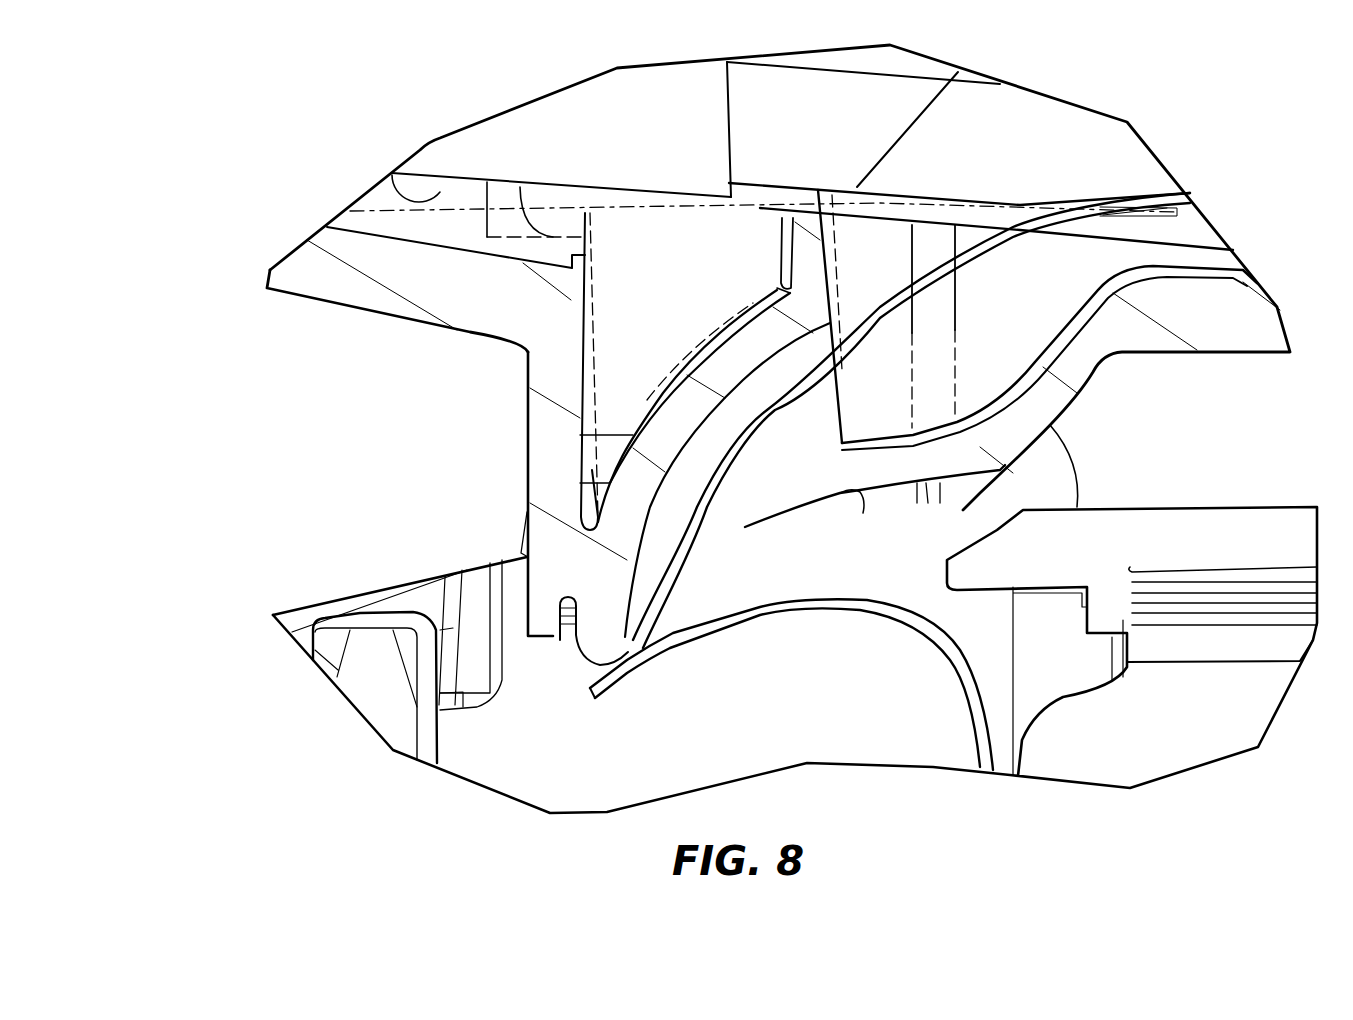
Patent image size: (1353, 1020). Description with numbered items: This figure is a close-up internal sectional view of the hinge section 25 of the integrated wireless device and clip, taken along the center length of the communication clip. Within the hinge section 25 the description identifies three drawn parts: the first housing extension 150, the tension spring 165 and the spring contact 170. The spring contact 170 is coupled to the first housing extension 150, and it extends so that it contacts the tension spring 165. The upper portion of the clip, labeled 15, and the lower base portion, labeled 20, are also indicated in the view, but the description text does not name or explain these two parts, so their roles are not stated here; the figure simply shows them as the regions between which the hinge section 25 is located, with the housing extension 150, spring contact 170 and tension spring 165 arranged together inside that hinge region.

The hinge cover 15 is at (268, 128).
The base 20 is at (258, 678).
The hinge section 25 is at (350, 447).
The first housing extension 150 is at (538, 365).
The tension spring 165 is at (800, 613).
The spring contact 170 is at (708, 522).